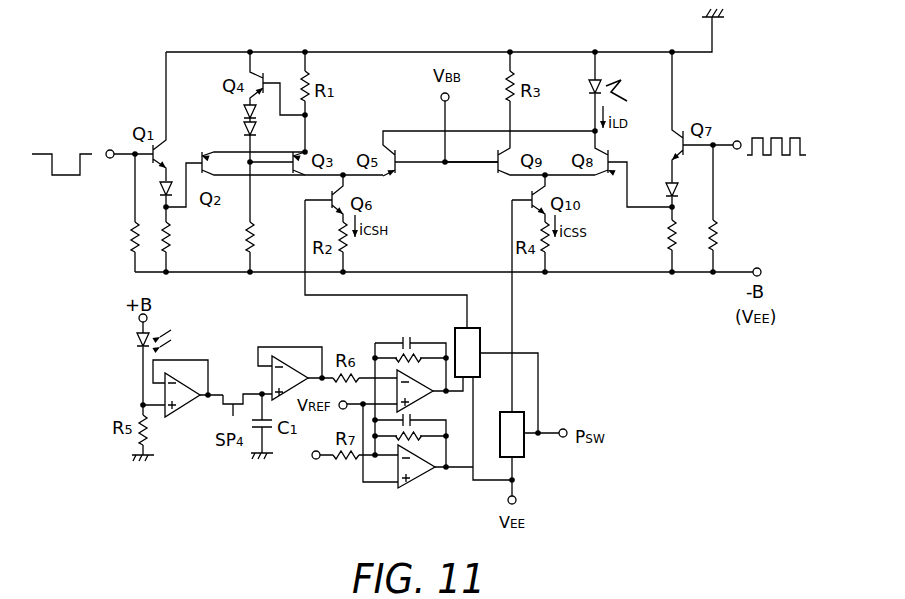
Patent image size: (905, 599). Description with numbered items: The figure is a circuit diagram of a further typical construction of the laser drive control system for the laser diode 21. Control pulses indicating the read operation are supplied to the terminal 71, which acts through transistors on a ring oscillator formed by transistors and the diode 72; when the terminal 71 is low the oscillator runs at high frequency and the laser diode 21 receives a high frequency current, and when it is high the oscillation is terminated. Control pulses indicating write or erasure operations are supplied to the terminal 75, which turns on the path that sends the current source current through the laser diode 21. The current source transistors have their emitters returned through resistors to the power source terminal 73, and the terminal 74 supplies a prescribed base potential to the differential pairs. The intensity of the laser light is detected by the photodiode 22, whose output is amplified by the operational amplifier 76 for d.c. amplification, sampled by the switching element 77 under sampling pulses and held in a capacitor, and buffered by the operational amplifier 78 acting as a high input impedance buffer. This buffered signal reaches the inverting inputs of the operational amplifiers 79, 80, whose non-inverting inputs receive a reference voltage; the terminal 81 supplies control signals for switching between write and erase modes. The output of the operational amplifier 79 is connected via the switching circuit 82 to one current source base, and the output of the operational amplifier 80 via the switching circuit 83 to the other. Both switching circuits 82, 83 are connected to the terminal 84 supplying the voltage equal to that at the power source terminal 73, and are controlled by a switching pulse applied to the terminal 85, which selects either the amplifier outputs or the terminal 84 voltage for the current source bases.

The laser diode 21 is at (590, 80).
The photodiode 22 is at (137, 342).
The terminal 71 is at (110, 159).
The diode 72 is at (243, 113).
The power source terminal 73 is at (755, 268).
The terminal 74 is at (441, 97).
The terminal 75 is at (735, 141).
The operational amplifier 76 is at (187, 404).
The switching element 77 is at (233, 393).
The operational amplifier 78 is at (301, 378).
The operational amplifier 79 is at (419, 400).
The operational amplifier 80 is at (412, 478).
The terminal 81 is at (315, 460).
The switching circuit 82 is at (459, 348).
The switching circuit 83 is at (524, 447).
The terminal 84 is at (516, 500).
The terminal 85 is at (563, 428).